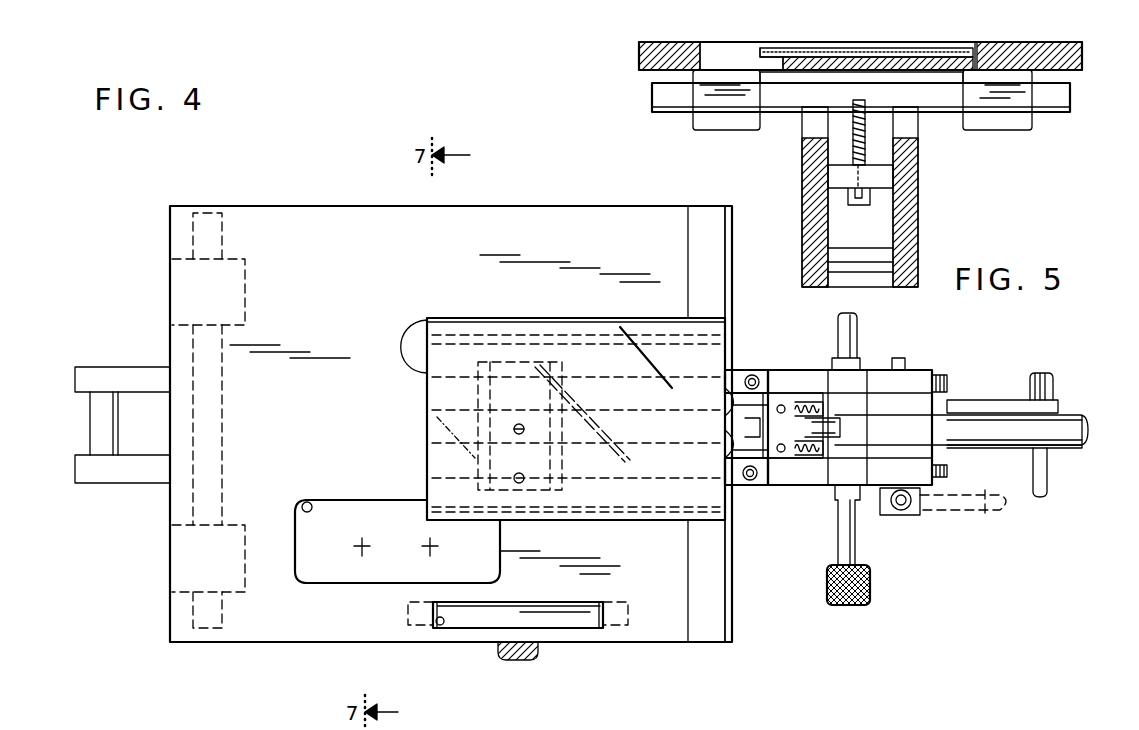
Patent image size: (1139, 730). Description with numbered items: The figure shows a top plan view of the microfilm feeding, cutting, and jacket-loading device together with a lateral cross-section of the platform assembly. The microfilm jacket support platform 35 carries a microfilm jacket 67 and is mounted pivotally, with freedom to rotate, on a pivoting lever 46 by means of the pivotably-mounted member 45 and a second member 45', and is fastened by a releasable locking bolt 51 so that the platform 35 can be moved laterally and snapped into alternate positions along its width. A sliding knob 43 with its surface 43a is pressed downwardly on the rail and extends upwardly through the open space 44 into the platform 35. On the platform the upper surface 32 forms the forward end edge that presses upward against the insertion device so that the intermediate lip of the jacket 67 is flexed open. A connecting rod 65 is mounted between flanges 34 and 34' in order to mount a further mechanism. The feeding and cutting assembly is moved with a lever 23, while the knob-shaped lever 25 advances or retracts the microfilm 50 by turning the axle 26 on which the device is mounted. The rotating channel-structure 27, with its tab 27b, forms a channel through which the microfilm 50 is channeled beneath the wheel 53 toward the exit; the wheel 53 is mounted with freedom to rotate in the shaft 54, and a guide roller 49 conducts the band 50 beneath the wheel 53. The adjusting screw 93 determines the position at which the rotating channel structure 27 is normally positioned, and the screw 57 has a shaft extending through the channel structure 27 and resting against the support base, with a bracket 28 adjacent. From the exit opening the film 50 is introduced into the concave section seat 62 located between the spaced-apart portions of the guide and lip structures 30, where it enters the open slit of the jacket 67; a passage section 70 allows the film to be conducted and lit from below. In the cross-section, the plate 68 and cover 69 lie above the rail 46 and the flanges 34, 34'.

In FIG. 4, the lever 23 is at (897, 510).
In FIG. 4, the lever (knob) 25 is at (845, 606).
In FIG. 4, the axle 26 is at (842, 512).
In FIG. 4, the channel-structure 27 is at (820, 455).
In FIG. 4, the tab 27b is at (842, 428).
In FIG. 4, the bracket 28 is at (930, 500).
In FIG. 4, the guide and lip structures 30 is at (763, 488).
In FIG. 4, the upper surface 32 is at (734, 540).
In FIG. 4, the flange 34 is at (122, 495).
In FIG. 5, the flange 34 is at (826, 197).
In FIG. 4, the flange 34' is at (122, 355).
In FIG. 5, the flange 34' is at (932, 197).
In FIG. 4, the microfilm jacket support platform 35 is at (355, 265).
In FIG. 5, the microfilm jacket support platform 35 is at (1014, 54).
In FIG. 4, the sliding knob 43 is at (476, 630).
In FIG. 4, the bar surface 43a is at (582, 640).
In FIG. 4, the open space 44 is at (443, 628).
In FIG. 4, the pivotably-mounted member 45 is at (236, 292).
In FIG. 5, the pivotably-mounted member 45 is at (997, 124).
In FIG. 4, the slide block 45' is at (222, 573).
In FIG. 5, the slide block 45' is at (726, 121).
In FIG. 4, the pivoting lever 46 is at (204, 212).
In FIG. 5, the pivoting lever 46 is at (663, 92).
In FIG. 4, the roller 49 is at (1000, 410).
In FIG. 4, the microfilm 50 is at (968, 414).
In FIG. 4, the releasable locking bolt 51 is at (516, 660).
In FIG. 4, the wheel 53 is at (830, 418).
In FIG. 4, the shaft 54 is at (816, 400).
In FIG. 4, the screw 57 is at (938, 455).
In FIG. 4, the concave channel (section seat) 62 is at (735, 448).
In FIG. 4, the connecting rod 65 is at (98, 422).
In FIG. 4, the microfilm jacket 67 is at (424, 422).
In FIG. 5, the microfilm jacket 67 is at (808, 62).
In FIG. 4, the plate 68 is at (414, 330).
In FIG. 5, the plate 68 is at (928, 46).
In FIG. 4, the cover plate 69 is at (304, 502).
In FIG. 5, the cover plate 69 is at (708, 48).
In FIG. 4, the passage channel (passage section) 70 is at (735, 406).
In FIG. 4, the adjusting screw (bolt) 93 is at (940, 376).